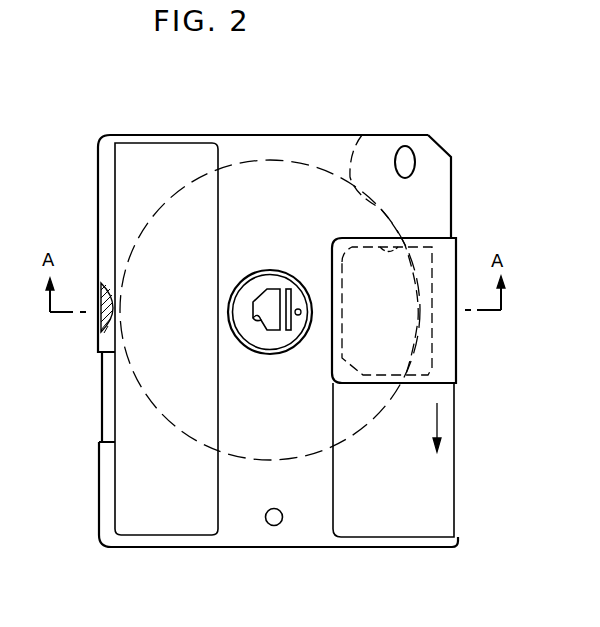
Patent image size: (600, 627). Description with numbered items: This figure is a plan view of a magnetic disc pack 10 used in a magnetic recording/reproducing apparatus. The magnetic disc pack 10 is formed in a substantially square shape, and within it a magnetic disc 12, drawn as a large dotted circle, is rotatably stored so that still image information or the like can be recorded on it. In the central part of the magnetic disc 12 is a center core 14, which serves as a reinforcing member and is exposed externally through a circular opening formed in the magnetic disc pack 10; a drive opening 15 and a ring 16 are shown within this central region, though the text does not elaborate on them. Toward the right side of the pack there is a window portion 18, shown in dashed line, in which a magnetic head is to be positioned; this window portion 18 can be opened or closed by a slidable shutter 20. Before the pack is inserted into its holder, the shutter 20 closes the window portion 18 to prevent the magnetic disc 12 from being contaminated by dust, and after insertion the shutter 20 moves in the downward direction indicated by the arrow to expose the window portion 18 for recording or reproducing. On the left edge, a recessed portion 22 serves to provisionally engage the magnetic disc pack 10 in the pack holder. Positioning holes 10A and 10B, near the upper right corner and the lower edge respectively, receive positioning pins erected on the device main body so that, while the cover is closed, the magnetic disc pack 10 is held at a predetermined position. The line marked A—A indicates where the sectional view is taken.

The magnetic disc pack 10 is at (311, 133).
The positioning hole 10A is at (412, 158).
The positioning hole 10B is at (276, 527).
The magnetic disc 12 is at (363, 133).
The center core 14 is at (264, 283).
The drive key hole 15 is at (265, 335).
The hub ring 16 is at (300, 280).
The window portion 18 is at (408, 232).
The shutter 20 is at (448, 263).
The recessed portion 22 is at (98, 313).